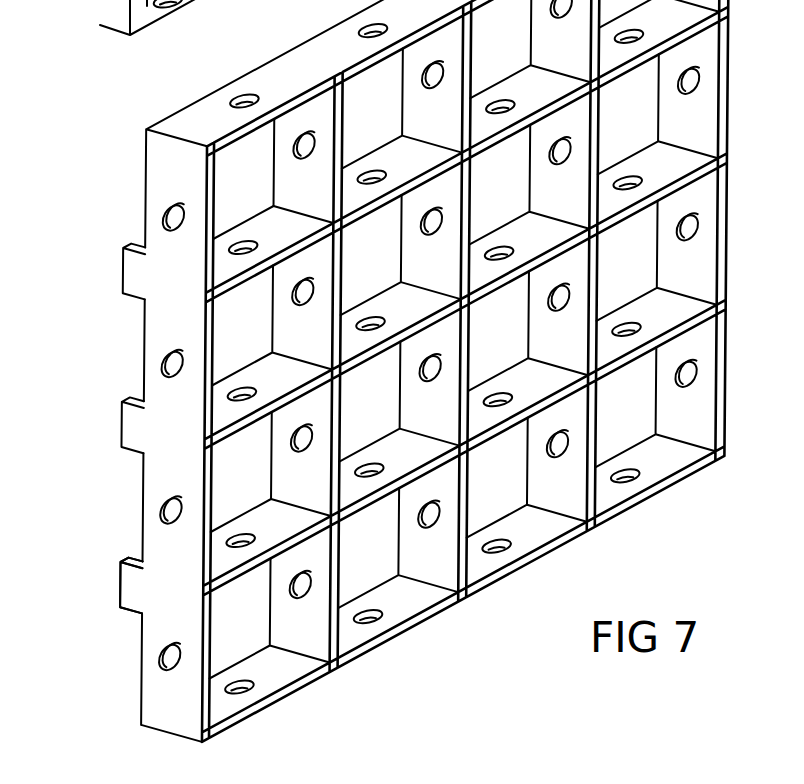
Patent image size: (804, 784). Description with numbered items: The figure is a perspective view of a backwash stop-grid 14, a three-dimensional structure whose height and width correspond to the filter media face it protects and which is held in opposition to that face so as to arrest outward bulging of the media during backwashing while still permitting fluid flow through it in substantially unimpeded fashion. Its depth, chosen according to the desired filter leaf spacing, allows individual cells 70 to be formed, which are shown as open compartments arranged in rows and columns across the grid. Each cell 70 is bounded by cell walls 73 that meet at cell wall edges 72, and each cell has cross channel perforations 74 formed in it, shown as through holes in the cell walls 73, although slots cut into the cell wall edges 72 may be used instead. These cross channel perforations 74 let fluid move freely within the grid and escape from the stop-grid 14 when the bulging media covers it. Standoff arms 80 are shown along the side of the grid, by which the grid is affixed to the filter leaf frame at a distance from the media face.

The backwash stop-grid 14 is at (100, 452).
The cell 70 is at (232, 163).
The cell wall edge 72 is at (282, 110).
The cell wall 73 is at (220, 253).
The cross channel perforation 74 is at (163, 364).
The standoff arm 80 is at (128, 575).